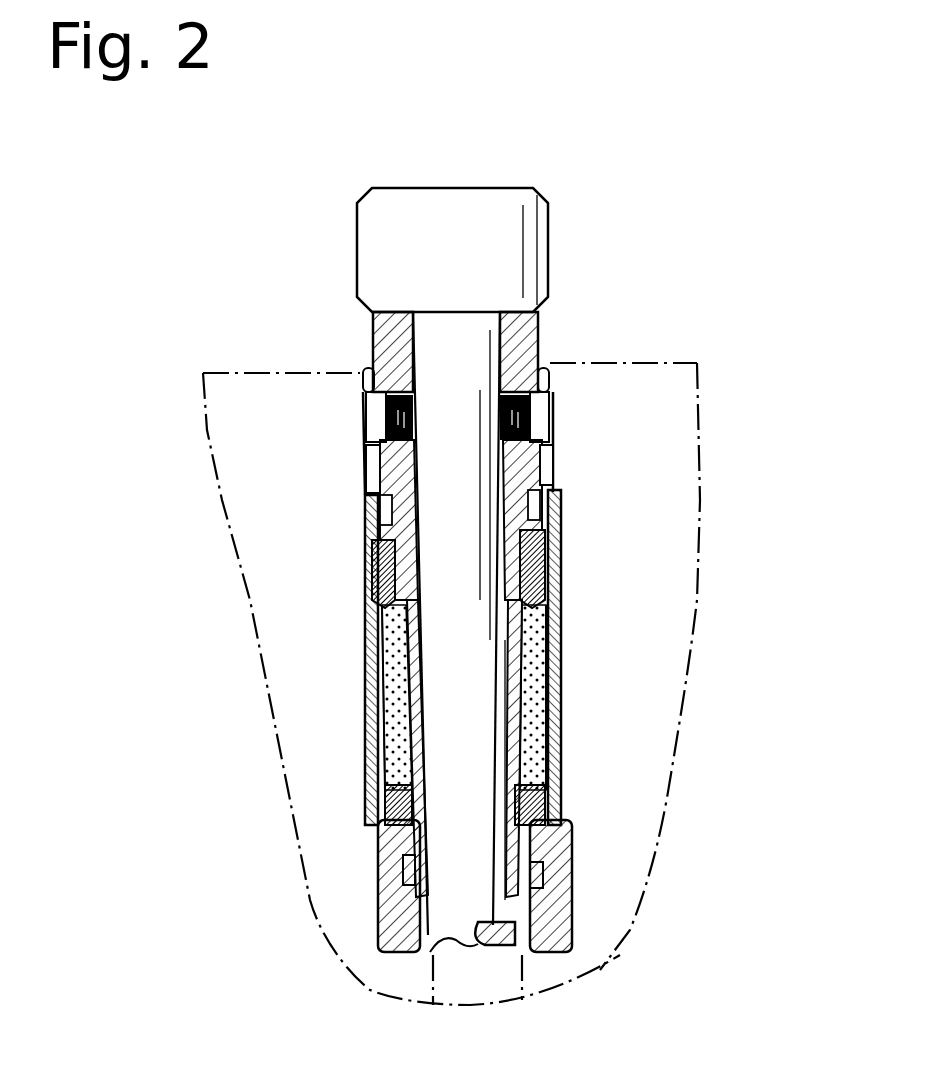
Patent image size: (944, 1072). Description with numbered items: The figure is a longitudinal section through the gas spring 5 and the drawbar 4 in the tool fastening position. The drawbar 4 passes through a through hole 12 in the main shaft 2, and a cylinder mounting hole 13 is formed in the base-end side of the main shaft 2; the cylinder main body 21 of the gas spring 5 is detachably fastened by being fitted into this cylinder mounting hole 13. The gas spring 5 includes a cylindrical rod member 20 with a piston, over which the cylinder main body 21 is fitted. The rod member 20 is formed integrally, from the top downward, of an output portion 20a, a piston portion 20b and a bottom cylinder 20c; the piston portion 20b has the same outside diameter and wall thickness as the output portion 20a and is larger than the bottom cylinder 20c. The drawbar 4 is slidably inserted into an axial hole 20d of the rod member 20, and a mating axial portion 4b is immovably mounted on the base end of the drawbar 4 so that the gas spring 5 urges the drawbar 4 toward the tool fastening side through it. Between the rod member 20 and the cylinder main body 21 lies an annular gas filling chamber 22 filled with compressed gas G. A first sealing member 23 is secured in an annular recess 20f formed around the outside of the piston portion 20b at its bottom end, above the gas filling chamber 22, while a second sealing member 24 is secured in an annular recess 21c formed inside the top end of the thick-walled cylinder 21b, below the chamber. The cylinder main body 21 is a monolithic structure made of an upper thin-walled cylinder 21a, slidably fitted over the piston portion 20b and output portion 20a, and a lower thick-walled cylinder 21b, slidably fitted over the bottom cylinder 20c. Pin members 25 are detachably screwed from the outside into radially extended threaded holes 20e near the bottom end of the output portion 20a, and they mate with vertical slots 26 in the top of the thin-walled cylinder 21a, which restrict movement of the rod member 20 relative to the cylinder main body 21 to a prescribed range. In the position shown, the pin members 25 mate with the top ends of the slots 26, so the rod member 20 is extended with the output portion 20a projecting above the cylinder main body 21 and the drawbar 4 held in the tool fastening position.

The main shaft 2 is at (697, 363).
The drawbar 4 is at (447, 927).
The mating axial portion 4b is at (508, 188).
The gas spring 5 is at (270, 506).
The through hole 12 is at (517, 967).
The cylinder mounting hole 13 is at (378, 927).
The rod member 20 is at (513, 583).
The output portion 20a is at (538, 328).
The piston portion 20b is at (550, 530).
The bottom cylinder 20c is at (560, 676).
The axial hole 20d is at (566, 845).
The threaded holes 20e is at (372, 370).
The annular recess 20f is at (492, 578).
The cylinder main body 21 is at (368, 698).
The thin-walled cylinder 21a is at (330, 522).
The thick-walled cylinder 21b is at (338, 850).
The annular recess 21c is at (335, 793).
The annular gas filling chamber 22 is at (338, 708).
The first sealing member 23 is at (545, 578).
The second sealing member 24 is at (560, 790).
The pin members 25 is at (366, 402).
The slots 26 is at (365, 462).
The compressed gas G is at (340, 645).